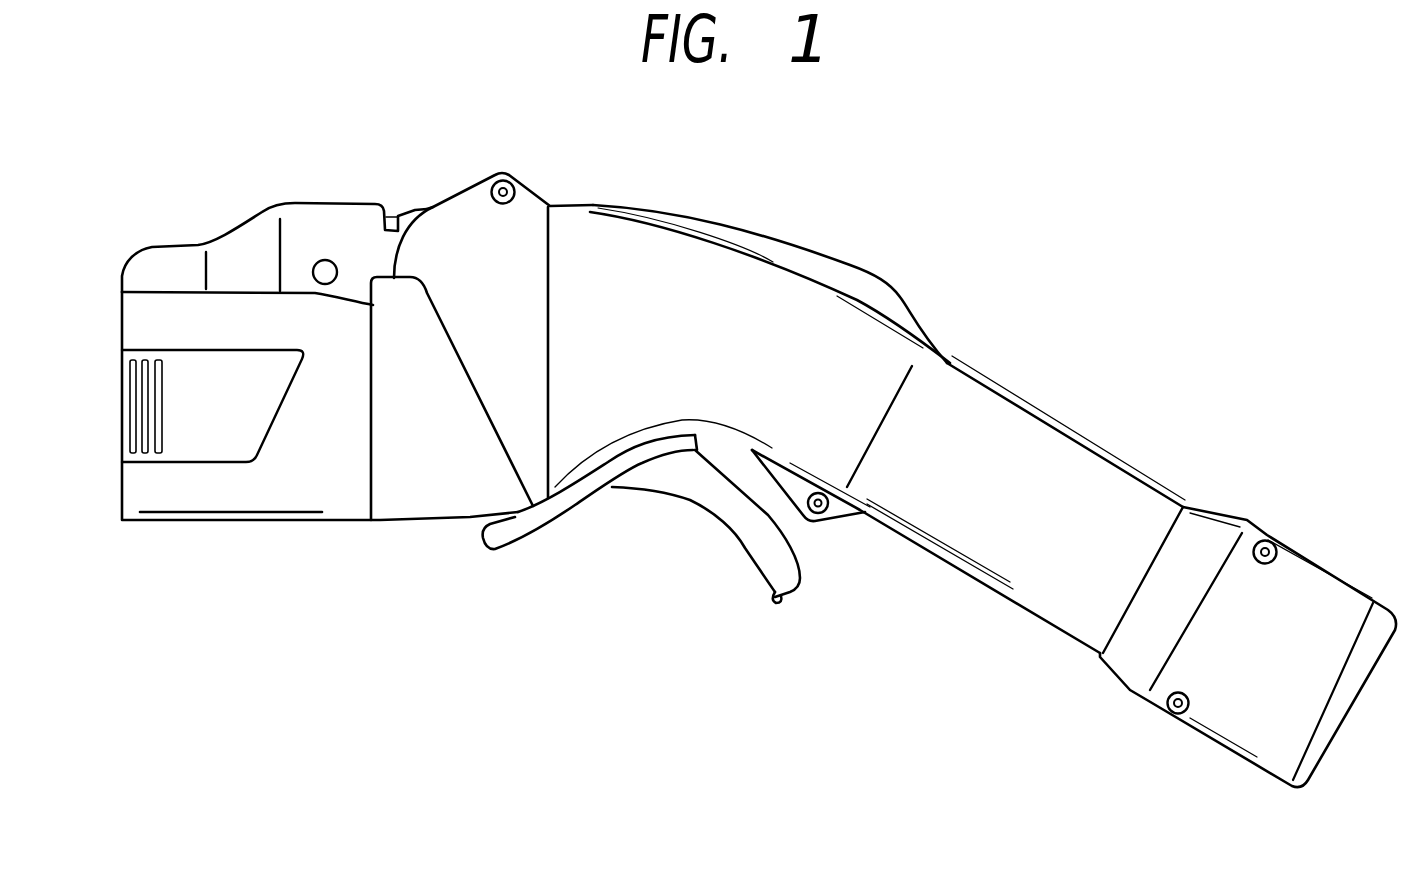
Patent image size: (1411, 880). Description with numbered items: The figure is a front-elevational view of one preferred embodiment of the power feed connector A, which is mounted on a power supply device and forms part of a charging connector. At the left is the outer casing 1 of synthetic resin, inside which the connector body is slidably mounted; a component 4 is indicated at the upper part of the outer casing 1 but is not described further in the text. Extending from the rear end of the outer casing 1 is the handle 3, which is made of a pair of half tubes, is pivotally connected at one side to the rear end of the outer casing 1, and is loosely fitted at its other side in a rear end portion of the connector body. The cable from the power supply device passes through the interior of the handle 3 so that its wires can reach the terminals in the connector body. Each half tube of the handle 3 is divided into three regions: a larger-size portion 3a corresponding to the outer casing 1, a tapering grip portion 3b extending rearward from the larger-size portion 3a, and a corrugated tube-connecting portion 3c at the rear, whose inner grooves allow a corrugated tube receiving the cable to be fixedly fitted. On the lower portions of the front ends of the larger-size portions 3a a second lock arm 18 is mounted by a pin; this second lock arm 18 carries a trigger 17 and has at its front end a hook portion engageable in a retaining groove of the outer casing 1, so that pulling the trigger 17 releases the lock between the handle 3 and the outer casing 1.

The outer casing 1 is at (238, 523).
The upper body portion 4 is at (325, 205).
The handle 3 is at (912, 338).
The larger-size portion 3a is at (527, 290).
The tapering grip portion 3b is at (1067, 463).
The corrugated tube-connecting portion 3c is at (1300, 583).
The trigger 17 is at (762, 550).
The second lock arm 18 is at (538, 513).
The power feed connector A is at (832, 220).